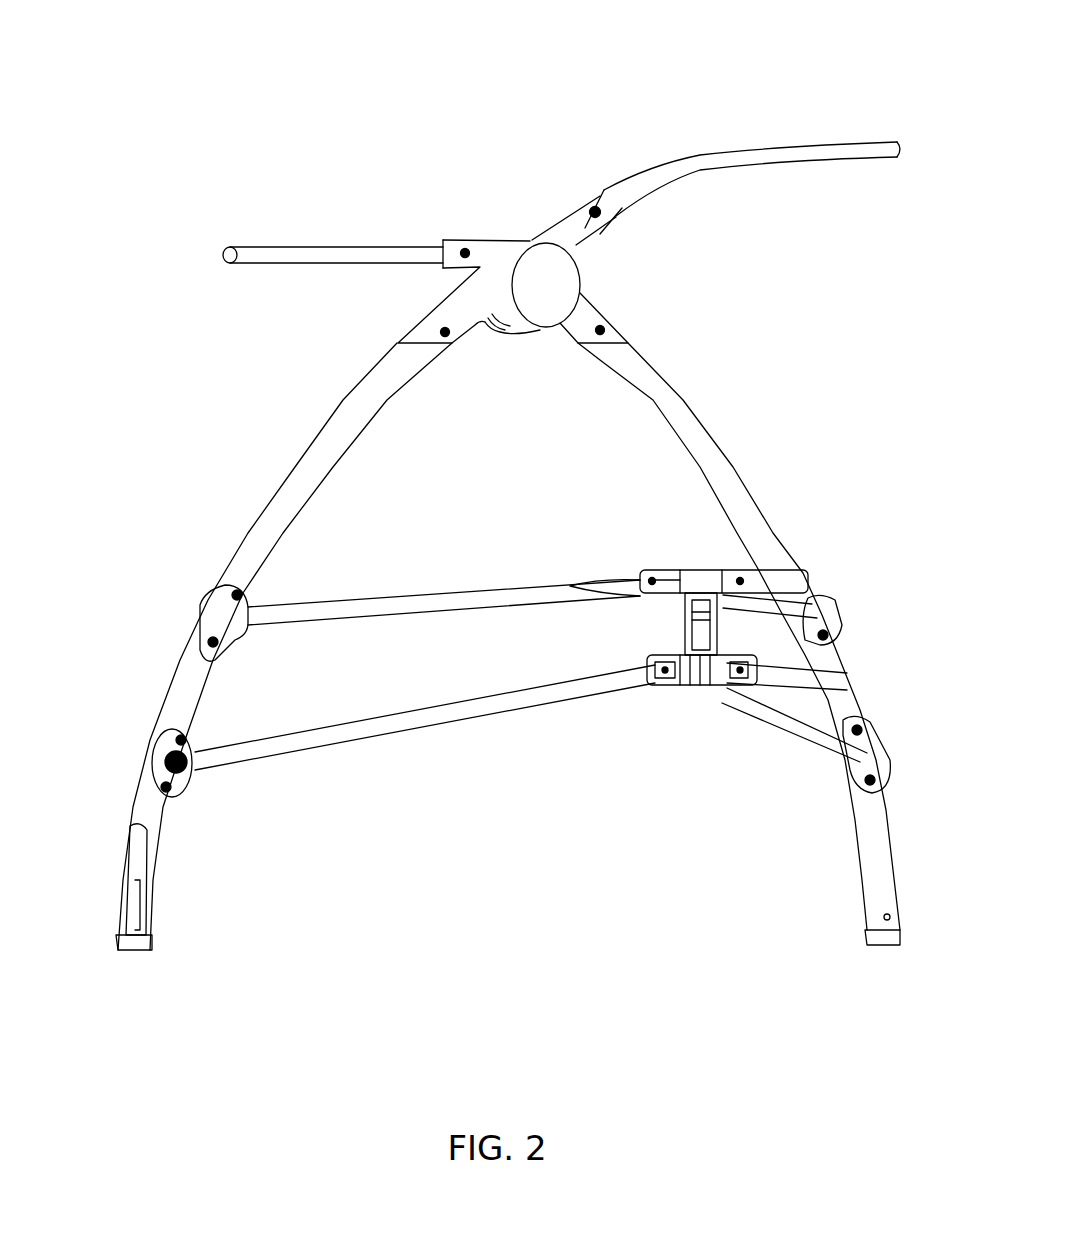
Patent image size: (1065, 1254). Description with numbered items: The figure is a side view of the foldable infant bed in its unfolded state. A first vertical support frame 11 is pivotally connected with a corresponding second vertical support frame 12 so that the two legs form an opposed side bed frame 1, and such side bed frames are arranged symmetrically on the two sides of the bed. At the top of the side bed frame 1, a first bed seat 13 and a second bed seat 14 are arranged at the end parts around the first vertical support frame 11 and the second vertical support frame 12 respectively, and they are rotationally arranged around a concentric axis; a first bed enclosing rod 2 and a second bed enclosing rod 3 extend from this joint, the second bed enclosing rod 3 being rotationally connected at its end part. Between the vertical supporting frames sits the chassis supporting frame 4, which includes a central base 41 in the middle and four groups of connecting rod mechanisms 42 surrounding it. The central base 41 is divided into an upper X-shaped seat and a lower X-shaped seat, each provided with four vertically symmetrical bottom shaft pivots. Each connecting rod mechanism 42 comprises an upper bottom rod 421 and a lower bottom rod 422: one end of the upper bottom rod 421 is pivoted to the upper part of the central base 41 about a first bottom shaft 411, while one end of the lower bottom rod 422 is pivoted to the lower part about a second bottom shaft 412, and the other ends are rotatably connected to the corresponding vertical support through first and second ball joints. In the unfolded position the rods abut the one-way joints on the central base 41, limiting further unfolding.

The side bed frame 1 is at (525, 208).
The first vertical support frame 11 is at (395, 377).
The second vertical support frame 12 is at (648, 377).
The first bed seat 13 is at (495, 262).
The second bed seat 14 is at (578, 210).
The first bed enclosing rod 2 is at (398, 262).
The second bed enclosing rod 3 is at (740, 157).
The chassis supporting frame 4 is at (547, 885).
The central base 41 is at (722, 720).
The first bottom shaft 411 is at (757, 577).
The second bottom shaft 412 is at (662, 690).
The connecting rod mechanism 42 is at (354, 775).
The upper bottom rod 421 is at (333, 608).
The lower bottom rod 422 is at (257, 750).